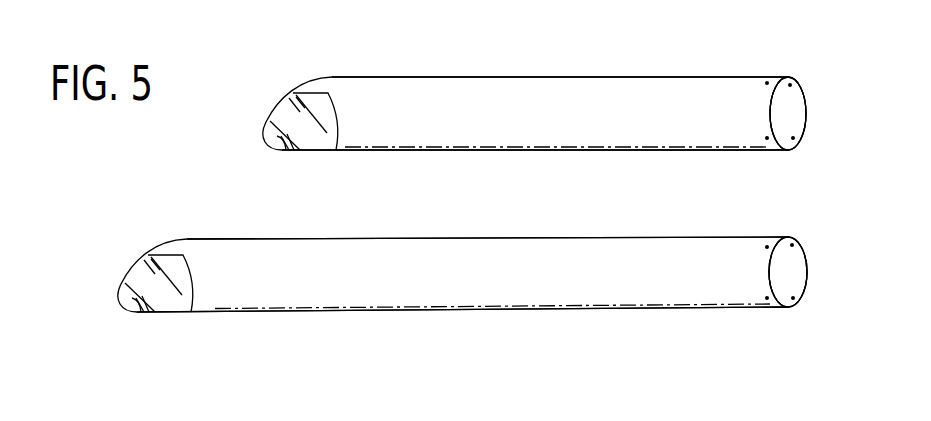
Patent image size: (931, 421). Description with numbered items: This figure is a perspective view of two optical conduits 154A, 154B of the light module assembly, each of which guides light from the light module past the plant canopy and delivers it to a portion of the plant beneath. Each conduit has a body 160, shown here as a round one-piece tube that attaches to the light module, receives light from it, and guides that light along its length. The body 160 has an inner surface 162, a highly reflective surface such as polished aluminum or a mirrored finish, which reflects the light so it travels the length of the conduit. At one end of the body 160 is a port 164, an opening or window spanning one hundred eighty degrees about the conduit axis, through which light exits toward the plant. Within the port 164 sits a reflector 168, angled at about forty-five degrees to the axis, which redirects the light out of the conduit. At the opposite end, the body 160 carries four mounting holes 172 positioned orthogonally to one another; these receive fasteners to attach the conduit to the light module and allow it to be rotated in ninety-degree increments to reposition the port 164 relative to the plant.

The optical conduit 154A is at (700, 72).
The optical conduit 154B is at (449, 318).
The body 160 is at (472, 90).
The inner surface 162 is at (782, 118).
The port 164 is at (267, 127).
The reflector 168 is at (305, 63).
The mounting holes 172 is at (748, 347).